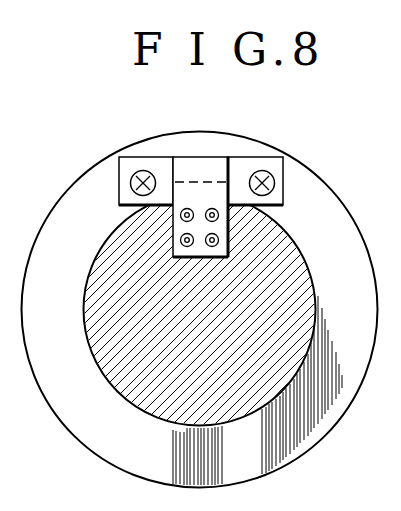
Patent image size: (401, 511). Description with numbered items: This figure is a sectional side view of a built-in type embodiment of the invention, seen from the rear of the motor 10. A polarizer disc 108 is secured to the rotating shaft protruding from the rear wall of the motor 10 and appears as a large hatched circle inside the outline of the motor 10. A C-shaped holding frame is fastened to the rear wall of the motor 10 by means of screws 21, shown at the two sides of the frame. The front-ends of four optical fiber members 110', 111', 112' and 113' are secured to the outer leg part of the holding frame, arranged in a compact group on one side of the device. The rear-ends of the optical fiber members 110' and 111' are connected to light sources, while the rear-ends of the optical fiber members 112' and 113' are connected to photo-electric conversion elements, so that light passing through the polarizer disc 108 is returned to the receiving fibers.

The motor 10 is at (113, 153).
The screws 21 is at (131, 186).
The polarizer disc 108 is at (313, 285).
The optical fiber member 110' is at (120, 254).
The optical fiber member 111' is at (279, 253).
The optical fiber member 112' is at (128, 222).
The optical fiber member 113' is at (270, 227).